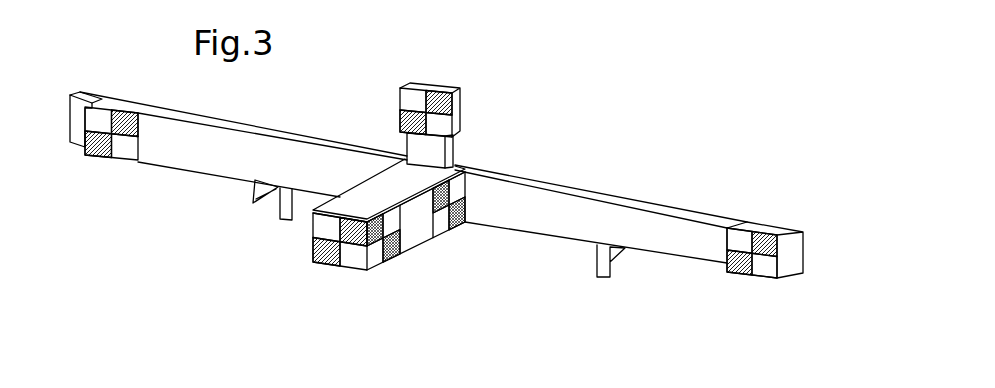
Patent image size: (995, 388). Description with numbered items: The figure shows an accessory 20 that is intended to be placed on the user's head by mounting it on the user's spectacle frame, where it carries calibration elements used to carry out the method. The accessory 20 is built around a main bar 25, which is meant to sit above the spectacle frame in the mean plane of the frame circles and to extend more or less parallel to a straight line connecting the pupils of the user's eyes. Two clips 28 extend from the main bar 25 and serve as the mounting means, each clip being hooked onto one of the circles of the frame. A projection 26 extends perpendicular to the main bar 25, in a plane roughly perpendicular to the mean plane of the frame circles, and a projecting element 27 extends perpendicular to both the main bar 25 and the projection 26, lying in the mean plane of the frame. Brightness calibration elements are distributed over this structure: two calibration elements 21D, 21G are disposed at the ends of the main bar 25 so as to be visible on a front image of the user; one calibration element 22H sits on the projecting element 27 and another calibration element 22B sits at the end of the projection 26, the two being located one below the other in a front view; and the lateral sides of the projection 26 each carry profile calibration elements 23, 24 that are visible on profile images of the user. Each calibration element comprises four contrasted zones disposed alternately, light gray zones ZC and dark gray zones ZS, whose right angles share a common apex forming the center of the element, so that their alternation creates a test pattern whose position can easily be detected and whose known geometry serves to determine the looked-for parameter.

The accessory 20 is at (485, 94).
The calibration element 21D is at (68, 136).
The calibration element 21G is at (802, 258).
The calibration element 22B is at (313, 257).
The calibration element 22H is at (433, 88).
The profile calibration element 23 is at (385, 261).
The profile calibration element 24 is at (445, 231).
The main bar 25 is at (585, 212).
The projection 26 is at (363, 196).
The projecting element 27 is at (435, 152).
The clip 28 is at (279, 210).
The light zone ZC is at (740, 236).
The dark zone ZS is at (767, 236).